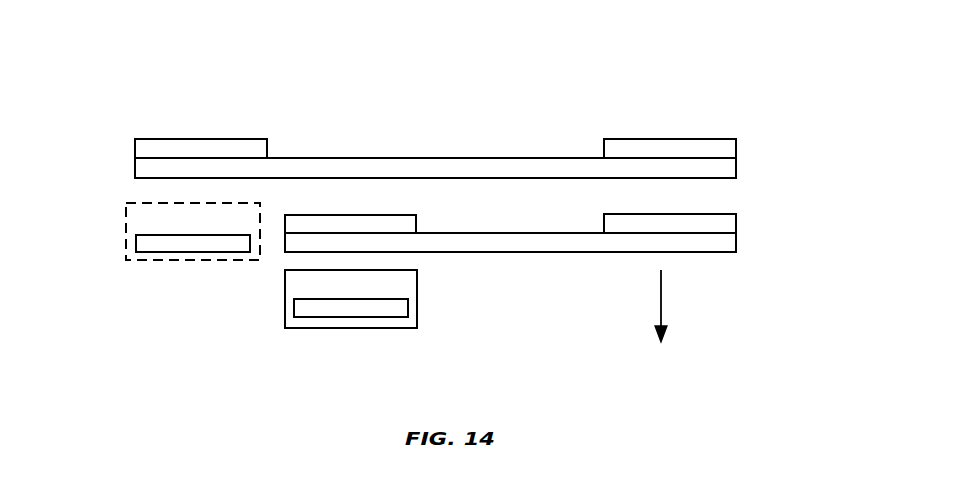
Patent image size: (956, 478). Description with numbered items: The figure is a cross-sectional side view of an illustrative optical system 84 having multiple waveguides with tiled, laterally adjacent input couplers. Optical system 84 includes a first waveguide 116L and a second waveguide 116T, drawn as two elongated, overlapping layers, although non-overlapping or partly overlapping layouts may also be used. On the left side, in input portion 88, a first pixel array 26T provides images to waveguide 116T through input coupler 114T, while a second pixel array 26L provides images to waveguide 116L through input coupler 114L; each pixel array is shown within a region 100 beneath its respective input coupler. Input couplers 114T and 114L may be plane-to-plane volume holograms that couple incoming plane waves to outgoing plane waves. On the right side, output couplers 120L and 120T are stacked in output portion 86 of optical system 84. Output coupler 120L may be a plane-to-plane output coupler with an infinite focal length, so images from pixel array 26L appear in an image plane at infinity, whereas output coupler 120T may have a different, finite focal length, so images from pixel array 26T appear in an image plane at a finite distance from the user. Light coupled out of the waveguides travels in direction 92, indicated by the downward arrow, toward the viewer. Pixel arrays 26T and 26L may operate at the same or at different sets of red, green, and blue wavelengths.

The optical system 84 is at (535, 54).
The output portion 86 is at (736, 103).
The input portion 88 is at (418, 102).
The direction 92 is at (661, 302).
The component region 100 is at (126, 210).
The first pixel array 26T is at (153, 252).
The second pixel array 26L is at (352, 317).
The input coupler 114T is at (135, 150).
The input coupler 114L is at (416, 225).
The second waveguide 116T is at (472, 158).
The first waveguide 116L is at (510, 252).
The output coupler 120T is at (736, 147).
The output coupler 120L is at (736, 222).